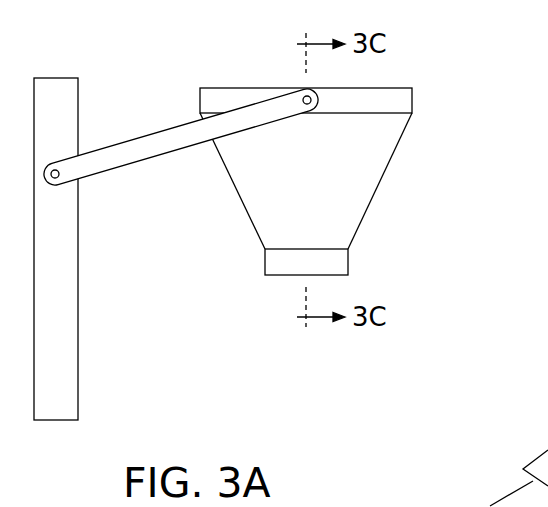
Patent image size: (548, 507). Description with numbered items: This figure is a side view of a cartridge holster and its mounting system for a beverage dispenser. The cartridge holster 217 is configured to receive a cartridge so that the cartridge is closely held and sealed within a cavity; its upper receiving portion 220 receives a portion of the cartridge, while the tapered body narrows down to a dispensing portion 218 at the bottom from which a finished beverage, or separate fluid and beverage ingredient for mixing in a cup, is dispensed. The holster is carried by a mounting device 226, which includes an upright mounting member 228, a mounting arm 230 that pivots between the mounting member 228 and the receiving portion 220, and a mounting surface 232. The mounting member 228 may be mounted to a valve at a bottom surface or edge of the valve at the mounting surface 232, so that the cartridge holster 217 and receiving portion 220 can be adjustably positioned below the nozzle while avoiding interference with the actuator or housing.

The cartridge holster 217 is at (363, 173).
The dispensing portion 218 is at (335, 266).
The receiving portion 220 is at (405, 98).
The mounting device 226 is at (67, 63).
The mounting member 228 is at (60, 305).
The mounting arm 230 is at (145, 147).
The mounting surface 232 is at (489, 506).